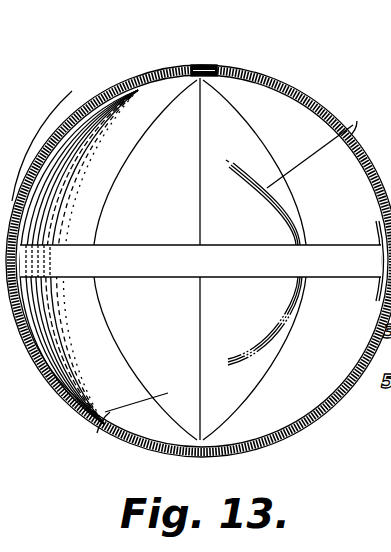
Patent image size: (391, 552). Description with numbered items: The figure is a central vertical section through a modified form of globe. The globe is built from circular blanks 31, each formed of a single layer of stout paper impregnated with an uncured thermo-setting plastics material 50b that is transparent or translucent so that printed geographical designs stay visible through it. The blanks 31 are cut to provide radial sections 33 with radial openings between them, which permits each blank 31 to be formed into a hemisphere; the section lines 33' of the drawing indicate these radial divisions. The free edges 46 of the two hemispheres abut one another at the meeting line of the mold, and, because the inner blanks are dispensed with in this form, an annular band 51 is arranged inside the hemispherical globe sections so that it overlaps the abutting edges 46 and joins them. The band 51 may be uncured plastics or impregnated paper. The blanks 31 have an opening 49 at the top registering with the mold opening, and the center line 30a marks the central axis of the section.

The blank 31 is at (150, 67).
The opening 49 is at (208, 67).
The free edges 46 is at (25, 242).
The seam curves 33' is at (217, 260).
The radial sections 33 is at (221, 284).
The center rib 30a is at (136, 91).
The annular band 51 is at (23, 248).
The thermo-setting plastics material 50b is at (65, 121).